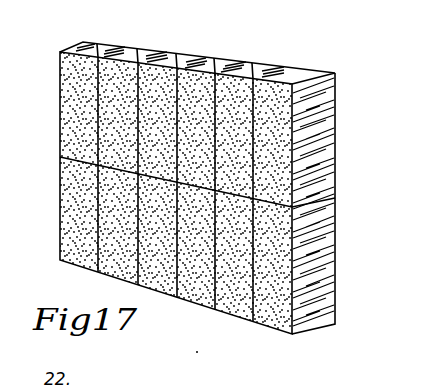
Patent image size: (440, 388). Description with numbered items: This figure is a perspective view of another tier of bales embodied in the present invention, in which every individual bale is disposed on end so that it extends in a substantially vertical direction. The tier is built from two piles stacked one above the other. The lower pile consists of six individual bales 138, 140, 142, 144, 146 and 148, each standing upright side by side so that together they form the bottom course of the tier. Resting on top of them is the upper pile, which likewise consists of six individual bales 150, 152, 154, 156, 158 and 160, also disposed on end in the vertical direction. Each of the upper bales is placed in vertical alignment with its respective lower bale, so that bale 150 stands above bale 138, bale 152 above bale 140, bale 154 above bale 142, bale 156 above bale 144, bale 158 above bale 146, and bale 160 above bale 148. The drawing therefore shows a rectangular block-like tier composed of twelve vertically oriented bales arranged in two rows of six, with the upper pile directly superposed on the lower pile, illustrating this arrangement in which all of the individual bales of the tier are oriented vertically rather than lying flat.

The bale 138 is at (68, 207).
The bale 140 is at (97, 272).
The bale 142 is at (140, 287).
The bale 144 is at (190, 304).
The bale 146 is at (232, 318).
The bale 148 is at (322, 291).
The bale 150 is at (70, 87).
The bale 152 is at (138, 50).
The bale 154 is at (171, 64).
The bale 156 is at (221, 60).
The bale 158 is at (268, 68).
The bale 160 is at (335, 118).